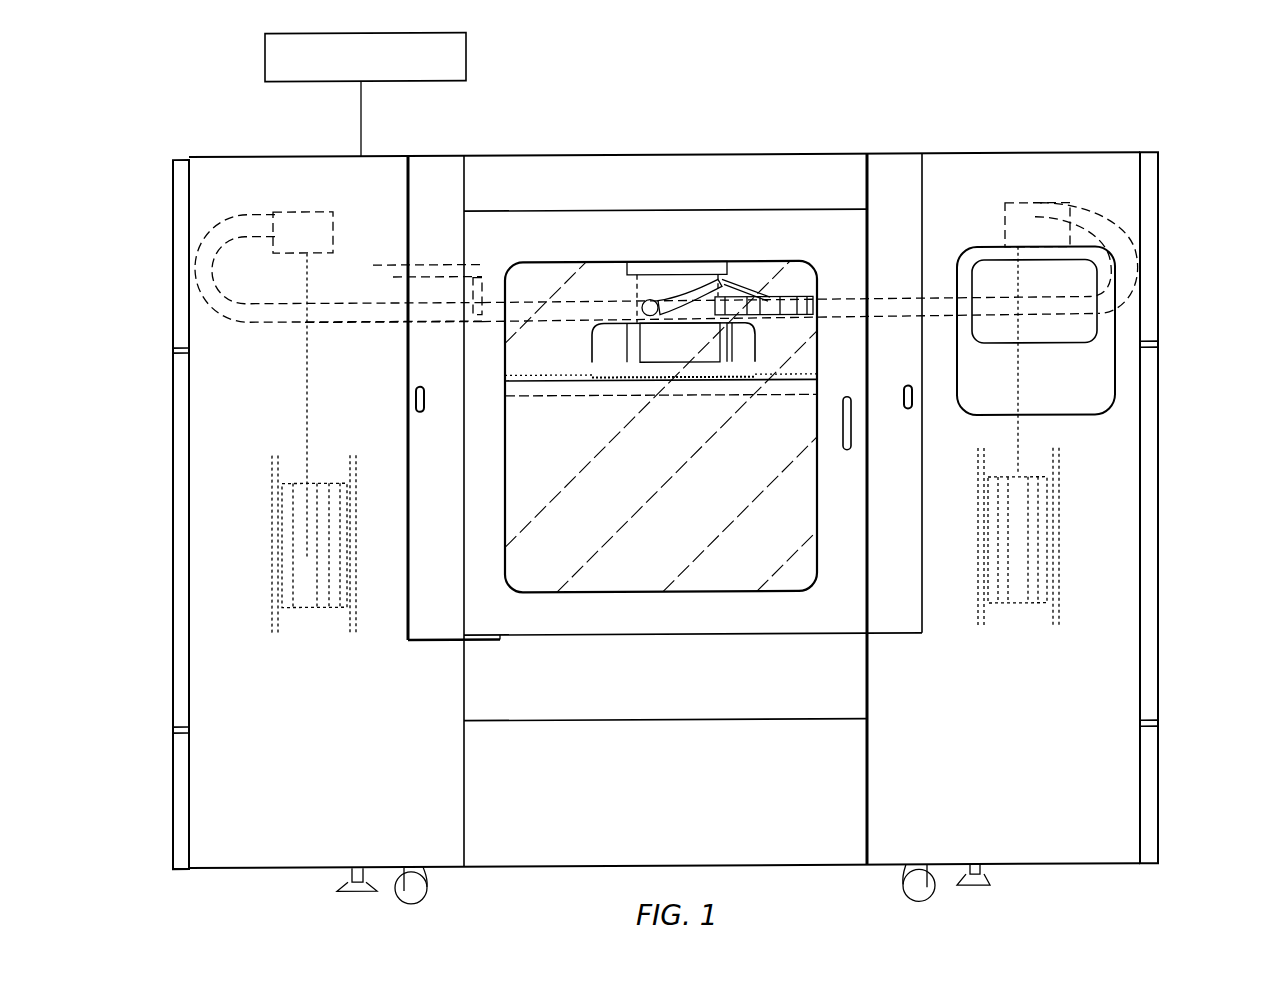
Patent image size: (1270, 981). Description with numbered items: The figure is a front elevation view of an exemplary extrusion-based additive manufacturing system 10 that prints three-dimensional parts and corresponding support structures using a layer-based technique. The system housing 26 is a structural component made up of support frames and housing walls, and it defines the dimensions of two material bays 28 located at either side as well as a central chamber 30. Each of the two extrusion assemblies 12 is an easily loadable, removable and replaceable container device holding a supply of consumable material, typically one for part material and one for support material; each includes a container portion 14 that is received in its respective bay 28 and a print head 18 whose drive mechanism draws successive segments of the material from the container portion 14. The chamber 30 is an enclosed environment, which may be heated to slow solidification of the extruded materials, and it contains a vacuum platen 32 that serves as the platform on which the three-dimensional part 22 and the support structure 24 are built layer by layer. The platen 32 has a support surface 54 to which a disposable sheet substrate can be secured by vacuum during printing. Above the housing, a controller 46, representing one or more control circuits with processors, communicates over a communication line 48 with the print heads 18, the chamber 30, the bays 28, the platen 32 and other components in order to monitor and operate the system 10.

The extrusion-based additive manufacturing system 10 is at (1076, 112).
The extrusion assembly 12 is at (223, 212).
The container portion 14 is at (247, 463).
The print head 18 is at (478, 284).
The 3D part 22 is at (743, 347).
The support structure 24 is at (723, 366).
The system housing 26 is at (1150, 694).
The material bay 28 is at (207, 413).
The chamber 30 is at (803, 470).
The vacuum platen 32 is at (608, 396).
The controller 46 is at (467, 56).
The communication line 48 is at (361, 110).
The support surface 54 is at (558, 381).